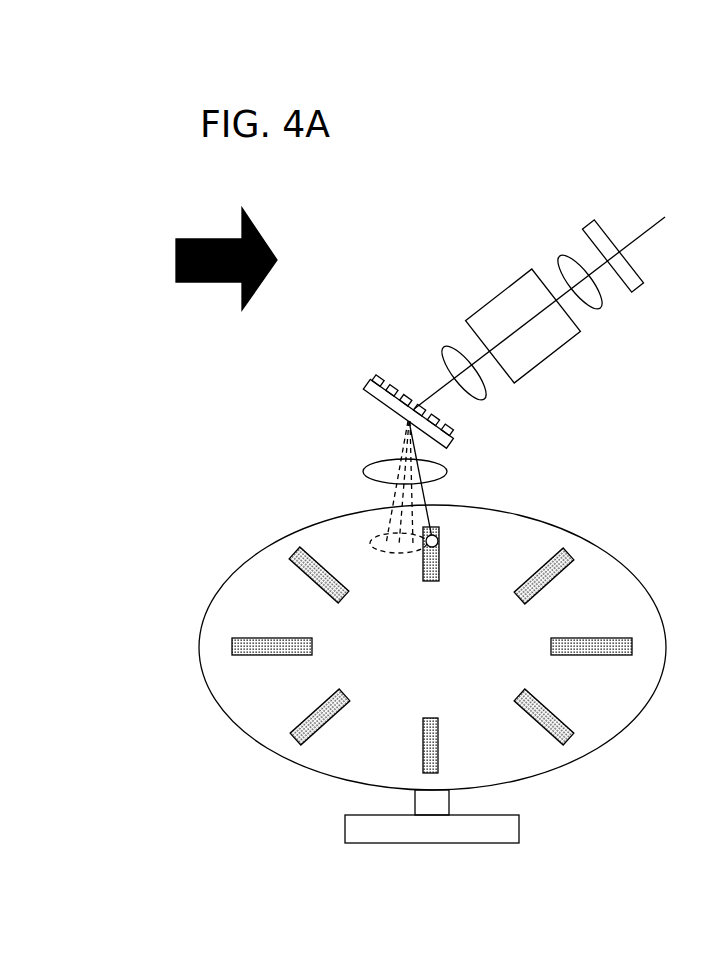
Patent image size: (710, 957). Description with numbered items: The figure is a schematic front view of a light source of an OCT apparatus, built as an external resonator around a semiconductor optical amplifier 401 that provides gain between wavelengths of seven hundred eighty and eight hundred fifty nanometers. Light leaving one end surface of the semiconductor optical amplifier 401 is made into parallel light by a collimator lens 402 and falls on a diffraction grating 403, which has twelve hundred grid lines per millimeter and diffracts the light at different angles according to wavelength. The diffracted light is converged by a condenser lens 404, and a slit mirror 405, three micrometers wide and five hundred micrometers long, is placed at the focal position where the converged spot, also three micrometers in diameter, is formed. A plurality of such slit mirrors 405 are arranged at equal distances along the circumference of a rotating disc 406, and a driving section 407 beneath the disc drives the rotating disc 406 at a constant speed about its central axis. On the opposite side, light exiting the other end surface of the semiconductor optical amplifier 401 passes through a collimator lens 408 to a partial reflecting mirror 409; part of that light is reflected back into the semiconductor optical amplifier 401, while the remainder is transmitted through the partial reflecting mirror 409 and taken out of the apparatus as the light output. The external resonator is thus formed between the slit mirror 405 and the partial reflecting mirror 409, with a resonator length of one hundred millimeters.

The semiconductor optical amplifier 401 is at (500, 295).
The collimator lens 402 is at (447, 350).
The diffraction grating 403 is at (453, 437).
The condenser lens 404 is at (362, 471).
The slit mirror 405 is at (440, 568).
The rotating disc 406 is at (580, 758).
The driving section 407 is at (345, 823).
The collimator lens 408 is at (562, 258).
The partial reflecting mirror 409 is at (588, 226).